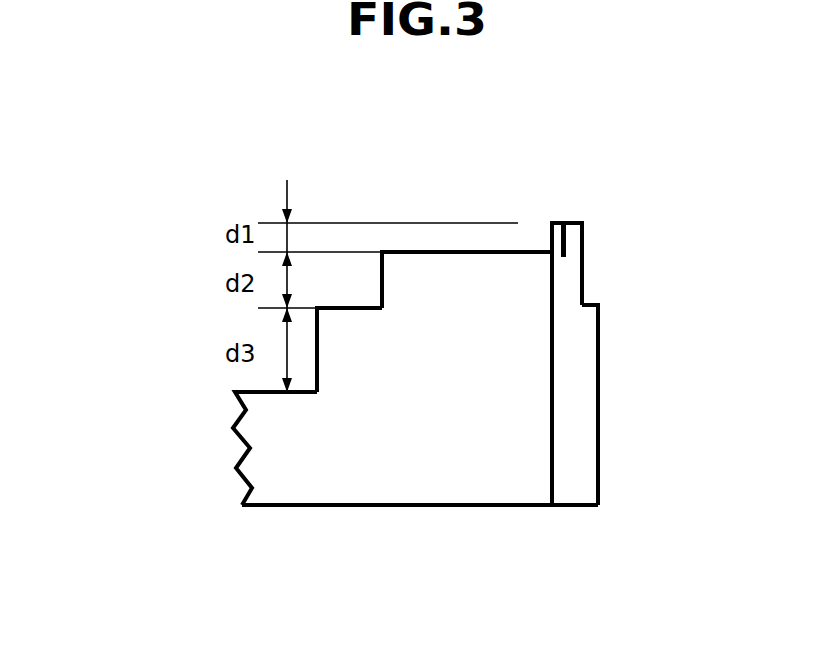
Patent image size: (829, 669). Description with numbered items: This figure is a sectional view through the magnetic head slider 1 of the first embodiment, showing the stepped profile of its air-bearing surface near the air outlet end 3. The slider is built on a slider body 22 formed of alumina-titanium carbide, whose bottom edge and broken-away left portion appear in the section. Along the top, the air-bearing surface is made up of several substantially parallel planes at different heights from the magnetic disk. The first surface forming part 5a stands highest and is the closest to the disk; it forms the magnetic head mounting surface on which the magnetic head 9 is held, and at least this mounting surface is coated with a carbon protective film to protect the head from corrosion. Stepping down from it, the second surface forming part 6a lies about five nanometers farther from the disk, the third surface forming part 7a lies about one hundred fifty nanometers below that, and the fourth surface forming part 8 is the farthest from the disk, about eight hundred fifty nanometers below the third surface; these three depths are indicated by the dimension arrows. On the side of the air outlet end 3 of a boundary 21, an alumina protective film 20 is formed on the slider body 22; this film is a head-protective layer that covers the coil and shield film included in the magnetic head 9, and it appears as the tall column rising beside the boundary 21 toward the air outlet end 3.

The magnetic head slider 1 is at (180, 272).
The air outlet end 3 is at (598, 320).
The first surface forming part 5a is at (562, 221).
The second surface forming part 6a is at (447, 251).
The third surface forming part 7a is at (347, 305).
The fourth surface forming part 8 is at (258, 390).
The magnetic head 9 is at (565, 221).
The alumina protective film 20 is at (570, 293).
The boundary 21 is at (549, 248).
The slider body 22 is at (429, 507).